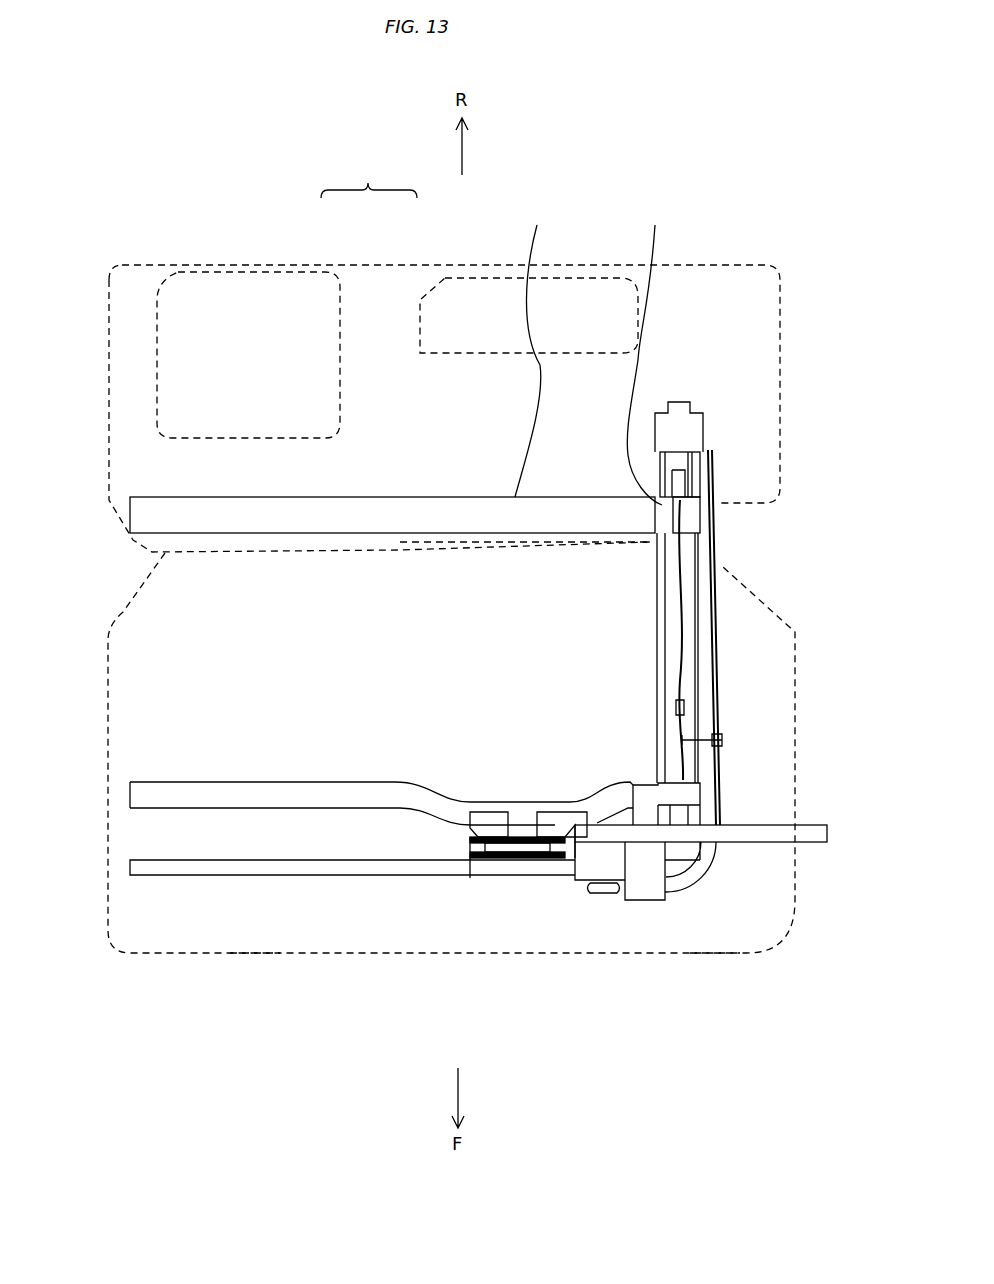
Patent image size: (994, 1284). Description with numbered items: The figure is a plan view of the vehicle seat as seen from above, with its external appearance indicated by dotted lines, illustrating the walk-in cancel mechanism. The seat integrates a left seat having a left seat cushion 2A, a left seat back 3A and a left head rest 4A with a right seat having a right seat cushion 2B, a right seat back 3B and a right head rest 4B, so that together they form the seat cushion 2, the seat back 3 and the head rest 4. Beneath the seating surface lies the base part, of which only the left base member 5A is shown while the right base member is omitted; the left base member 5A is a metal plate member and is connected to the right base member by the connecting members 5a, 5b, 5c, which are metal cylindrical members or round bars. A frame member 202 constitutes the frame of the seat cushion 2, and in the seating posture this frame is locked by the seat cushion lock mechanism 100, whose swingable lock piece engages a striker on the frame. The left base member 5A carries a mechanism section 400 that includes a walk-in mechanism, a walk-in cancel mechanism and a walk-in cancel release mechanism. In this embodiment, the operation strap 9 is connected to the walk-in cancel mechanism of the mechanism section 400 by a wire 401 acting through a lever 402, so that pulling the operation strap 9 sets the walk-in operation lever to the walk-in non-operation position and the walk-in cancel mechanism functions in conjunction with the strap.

The seat cushion 2 is at (125, 612).
The left seat cushion 2A is at (712, 955).
The right seat cushion 2B is at (258, 955).
The seat back 3 is at (122, 265).
The left seat back 3A is at (520, 533).
The right seat back 3B is at (245, 540).
The head rest 4 is at (369, 176).
The left head rest 4A is at (440, 278).
The right head rest 4B is at (313, 268).
The connecting member 5a is at (533, 350).
The left base member 5A is at (688, 648).
The connecting member 5b is at (178, 875).
The connecting member 5c is at (325, 808).
The operation strap 9 is at (812, 842).
The seat cushion lock mechanism 100 is at (518, 866).
The frame member 202 is at (650, 354).
The mechanism section 400 is at (718, 527).
The wire 401 is at (723, 772).
The lever 402 is at (572, 878).